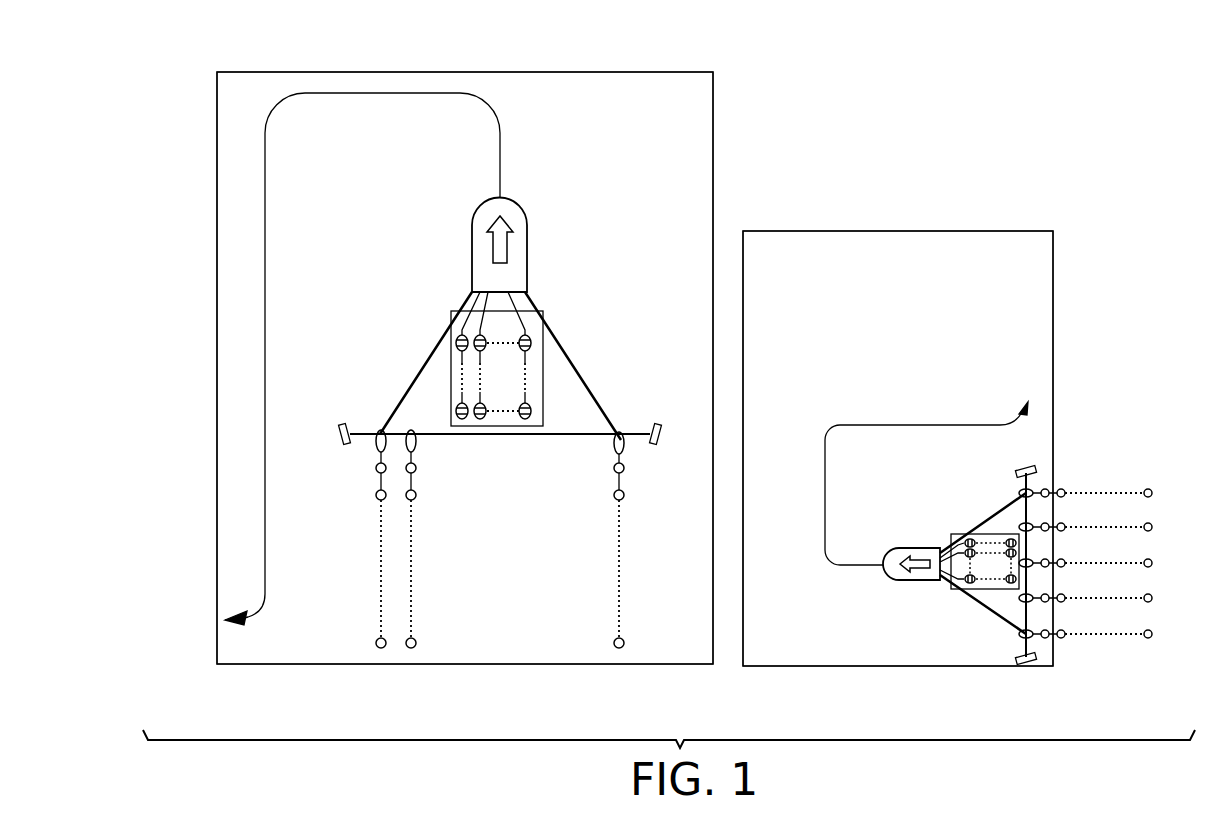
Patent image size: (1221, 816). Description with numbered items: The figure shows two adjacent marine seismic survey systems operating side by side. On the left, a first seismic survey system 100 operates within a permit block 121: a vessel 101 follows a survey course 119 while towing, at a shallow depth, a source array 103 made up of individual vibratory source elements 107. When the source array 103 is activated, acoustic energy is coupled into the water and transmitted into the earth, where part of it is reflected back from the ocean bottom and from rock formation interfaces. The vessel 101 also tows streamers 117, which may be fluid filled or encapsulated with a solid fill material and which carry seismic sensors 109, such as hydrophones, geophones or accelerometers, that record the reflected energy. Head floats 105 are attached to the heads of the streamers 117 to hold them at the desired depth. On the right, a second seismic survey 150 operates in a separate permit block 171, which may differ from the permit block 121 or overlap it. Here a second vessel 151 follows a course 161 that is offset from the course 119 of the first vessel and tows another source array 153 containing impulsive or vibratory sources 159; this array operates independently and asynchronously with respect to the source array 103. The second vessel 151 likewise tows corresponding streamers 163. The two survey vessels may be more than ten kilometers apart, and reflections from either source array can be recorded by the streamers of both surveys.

The seismic survey system 100 is at (490, 47).
The vessel 101 is at (527, 240).
The source array 103 is at (451, 311).
The head floats 105 is at (620, 431).
The source elements 107 is at (455, 411).
The seismic sensors 109 is at (614, 494).
The streamers 117 is at (628, 452).
The survey course 119 is at (265, 192).
The permit block 121 is at (290, 664).
The second seismic survey 150 is at (947, 208).
The second vessel 151 is at (915, 548).
The source array 153 is at (977, 591).
The sources 159 is at (1011, 585).
The course 161 is at (918, 425).
The streamers 163 is at (1108, 491).
The permit block 171 is at (890, 667).